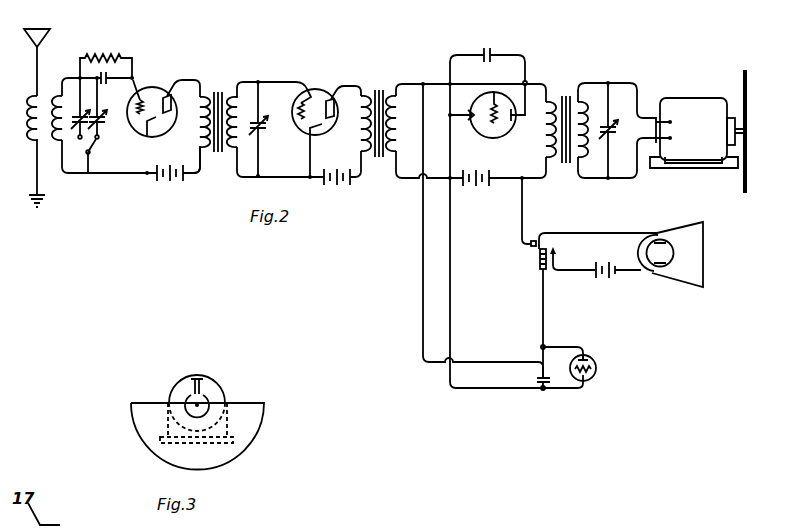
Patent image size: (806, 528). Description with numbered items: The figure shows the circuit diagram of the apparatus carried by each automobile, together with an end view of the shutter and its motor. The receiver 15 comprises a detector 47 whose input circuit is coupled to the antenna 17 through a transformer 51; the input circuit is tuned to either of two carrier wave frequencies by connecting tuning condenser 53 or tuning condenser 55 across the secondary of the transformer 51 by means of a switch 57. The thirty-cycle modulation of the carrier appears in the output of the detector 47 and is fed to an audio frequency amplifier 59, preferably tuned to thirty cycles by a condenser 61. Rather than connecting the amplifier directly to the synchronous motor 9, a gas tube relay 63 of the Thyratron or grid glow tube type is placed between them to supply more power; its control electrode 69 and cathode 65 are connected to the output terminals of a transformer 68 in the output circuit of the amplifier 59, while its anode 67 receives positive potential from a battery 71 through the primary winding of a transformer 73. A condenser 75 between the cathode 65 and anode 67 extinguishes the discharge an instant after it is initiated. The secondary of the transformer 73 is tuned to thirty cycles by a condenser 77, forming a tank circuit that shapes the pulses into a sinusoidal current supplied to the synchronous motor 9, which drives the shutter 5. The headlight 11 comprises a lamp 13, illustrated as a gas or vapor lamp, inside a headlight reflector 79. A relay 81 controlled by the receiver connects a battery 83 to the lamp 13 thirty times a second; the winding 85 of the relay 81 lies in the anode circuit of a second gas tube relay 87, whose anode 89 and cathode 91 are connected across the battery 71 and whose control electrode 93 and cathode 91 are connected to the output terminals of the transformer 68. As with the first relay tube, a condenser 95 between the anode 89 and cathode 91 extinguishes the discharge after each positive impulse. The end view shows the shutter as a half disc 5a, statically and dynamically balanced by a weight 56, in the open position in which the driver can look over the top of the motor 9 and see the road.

In FIG. 2, the antenna 17 is at (46, 33).
In FIG. 2, the transformer 51 is at (40, 93).
In FIG. 2, the tuning condenser 53 is at (84, 119).
In FIG. 2, the tuning condenser 55 is at (100, 119).
In FIG. 2, the switch 57 is at (91, 154).
In FIG. 2, the detector 47 is at (150, 90).
In FIG. 2, the receiver 15 is at (354, 60).
In FIG. 2, the audio frequency amplifier 59 is at (311, 97).
In FIG. 2, the condenser 61 is at (264, 129).
In FIG. 2, the transformer 68 is at (378, 101).
In FIG. 2, the condenser 75 is at (500, 52).
In FIG. 2, the gas tube relay 63 is at (493, 120).
In FIG. 2, the cathode 65 is at (471, 120).
In FIG. 2, the anode 67 is at (511, 120).
In FIG. 2, the control electrode 69 is at (494, 103).
In FIG. 2, the battery 71 is at (483, 188).
In FIG. 2, the transformer 73 is at (567, 100).
In FIG. 2, the condenser 77 is at (609, 135).
In FIG. 2, the synchronous motor 9 is at (697, 108).
In FIG. 3, the synchronous motor 9 is at (217, 390).
In FIG. 2, the shutter 5 is at (743, 80).
In FIG. 2, the relay 81 is at (522, 271).
In FIG. 2, the winding 85 is at (536, 268).
In FIG. 2, the battery 83 is at (610, 280).
In FIG. 2, the headlight 11 is at (738, 261).
In FIG. 2, the headlight reflector 79 is at (689, 288).
In FIG. 2, the lamp 13 is at (669, 242).
In FIG. 2, the condenser 95 is at (539, 372).
In FIG. 2, the gas tube relay 87 is at (617, 394).
In FIG. 2, the anode 89 is at (585, 357).
In FIG. 2, the control electrode 93 is at (595, 366).
In FIG. 2, the cathode 91 is at (584, 382).
In FIG. 3, the half disc 5a is at (238, 455).
In FIG. 3, the weight 56 is at (203, 377).